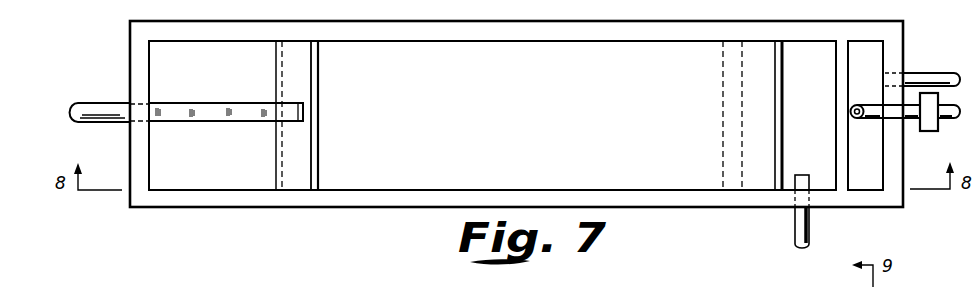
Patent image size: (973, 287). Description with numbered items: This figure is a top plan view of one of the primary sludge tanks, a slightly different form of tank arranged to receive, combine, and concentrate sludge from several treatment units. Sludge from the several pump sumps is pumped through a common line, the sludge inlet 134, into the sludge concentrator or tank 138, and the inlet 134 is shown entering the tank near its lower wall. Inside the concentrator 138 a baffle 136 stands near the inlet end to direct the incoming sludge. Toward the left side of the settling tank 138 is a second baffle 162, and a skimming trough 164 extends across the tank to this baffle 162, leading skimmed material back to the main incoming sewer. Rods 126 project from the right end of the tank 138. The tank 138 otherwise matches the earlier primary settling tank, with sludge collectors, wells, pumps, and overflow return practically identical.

The push rods 126 is at (945, 84).
The sludge inlet 134 is at (800, 249).
The baffle 136 is at (781, 127).
The sludge concentrator 138 is at (273, 200).
The baffle 162 is at (304, 168).
The skimming trough 164 is at (213, 113).